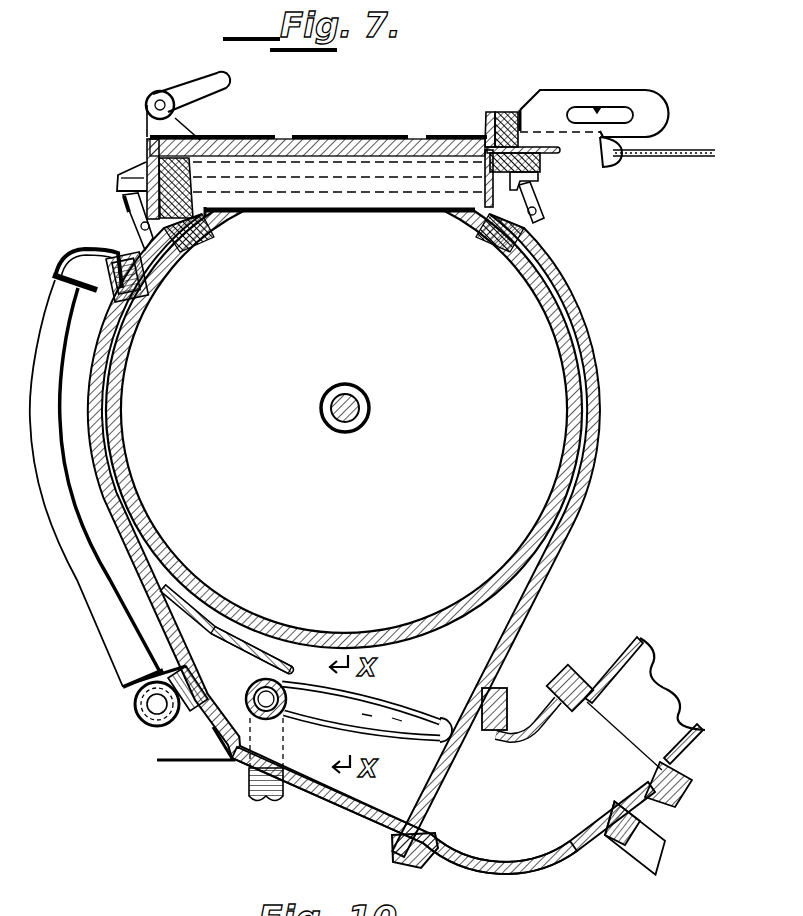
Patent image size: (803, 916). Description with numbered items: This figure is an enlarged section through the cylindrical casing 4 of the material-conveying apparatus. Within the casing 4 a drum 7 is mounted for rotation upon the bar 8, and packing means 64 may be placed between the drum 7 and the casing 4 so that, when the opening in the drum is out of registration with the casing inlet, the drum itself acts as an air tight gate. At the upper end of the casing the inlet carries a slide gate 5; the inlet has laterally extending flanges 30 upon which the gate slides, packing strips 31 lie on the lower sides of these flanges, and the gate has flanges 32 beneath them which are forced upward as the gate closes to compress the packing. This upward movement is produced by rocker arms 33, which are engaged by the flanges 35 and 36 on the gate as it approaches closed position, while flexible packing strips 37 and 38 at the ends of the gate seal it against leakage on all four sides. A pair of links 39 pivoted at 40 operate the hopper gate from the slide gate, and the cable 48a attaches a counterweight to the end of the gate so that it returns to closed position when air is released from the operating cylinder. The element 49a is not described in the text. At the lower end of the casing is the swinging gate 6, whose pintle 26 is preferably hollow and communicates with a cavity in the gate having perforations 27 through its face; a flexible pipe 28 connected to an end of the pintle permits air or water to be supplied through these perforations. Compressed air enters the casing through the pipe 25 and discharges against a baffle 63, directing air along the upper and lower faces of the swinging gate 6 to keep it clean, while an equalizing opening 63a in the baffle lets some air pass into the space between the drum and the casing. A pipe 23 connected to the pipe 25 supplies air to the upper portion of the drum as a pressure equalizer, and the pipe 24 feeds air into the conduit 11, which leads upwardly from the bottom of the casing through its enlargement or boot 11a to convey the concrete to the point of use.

The cylindrical casing 4 is at (601, 393).
The slide gate 5 is at (220, 147).
The swinging gate 6 is at (421, 746).
The drum 7 is at (566, 362).
The bar 8 is at (332, 406).
The conduit 11 is at (617, 660).
The boot 11a is at (335, 805).
The pipe 23 is at (78, 580).
The pipe 24 is at (637, 857).
The pipe 25 is at (143, 722).
The pintle 26 is at (247, 694).
The perforations 27 is at (367, 718).
The flexible pipe 28 is at (250, 778).
The laterally extending flange 30 is at (540, 151).
The packing strip 31 is at (325, 165).
The gate flange 32 is at (437, 206).
The rocker arm 33 is at (128, 213).
The gate flange 35 is at (117, 188).
The gate flange 36 is at (539, 176).
The flexible packing strip 37 is at (162, 167).
The flexible packing strip 38 is at (502, 112).
The link 39 is at (190, 84).
The pivot 40 is at (156, 92).
The cable 48a is at (687, 158).
The latch plate 49a is at (610, 110).
The baffle 63 is at (197, 615).
The equalizing opening 63a is at (237, 640).
The packing means 64 is at (194, 228).